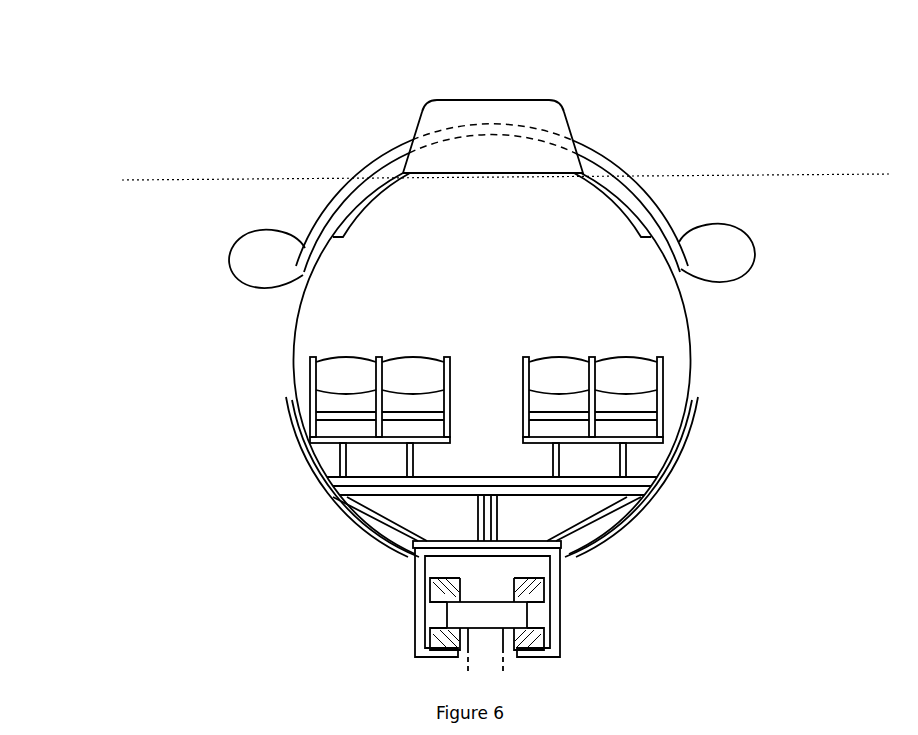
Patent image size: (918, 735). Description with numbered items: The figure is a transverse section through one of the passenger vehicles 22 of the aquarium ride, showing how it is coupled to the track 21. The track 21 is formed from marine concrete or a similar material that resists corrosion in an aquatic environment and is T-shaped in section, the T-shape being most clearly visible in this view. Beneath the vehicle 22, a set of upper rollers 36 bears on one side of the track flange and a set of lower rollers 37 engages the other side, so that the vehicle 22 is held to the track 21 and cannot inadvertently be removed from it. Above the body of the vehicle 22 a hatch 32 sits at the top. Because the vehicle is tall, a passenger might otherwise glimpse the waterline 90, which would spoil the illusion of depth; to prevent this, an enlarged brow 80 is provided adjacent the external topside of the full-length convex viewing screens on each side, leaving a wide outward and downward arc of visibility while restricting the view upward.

The track 21 is at (487, 630).
The vehicle 22 is at (668, 203).
The hatch 32 is at (436, 98).
The upper rollers 36 is at (444, 592).
The lower rollers 37 is at (444, 641).
The brow 80 is at (240, 287).
The waterline 90 is at (185, 168).